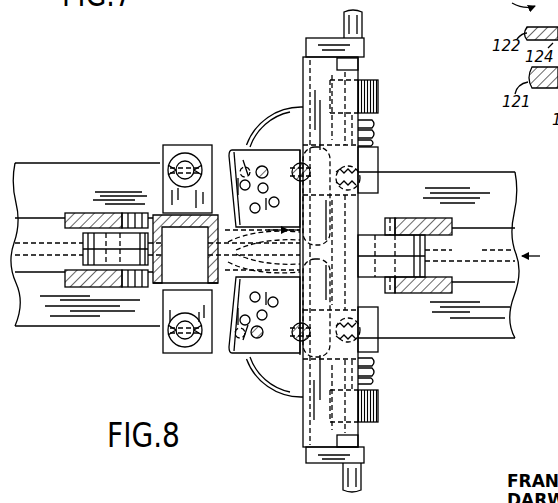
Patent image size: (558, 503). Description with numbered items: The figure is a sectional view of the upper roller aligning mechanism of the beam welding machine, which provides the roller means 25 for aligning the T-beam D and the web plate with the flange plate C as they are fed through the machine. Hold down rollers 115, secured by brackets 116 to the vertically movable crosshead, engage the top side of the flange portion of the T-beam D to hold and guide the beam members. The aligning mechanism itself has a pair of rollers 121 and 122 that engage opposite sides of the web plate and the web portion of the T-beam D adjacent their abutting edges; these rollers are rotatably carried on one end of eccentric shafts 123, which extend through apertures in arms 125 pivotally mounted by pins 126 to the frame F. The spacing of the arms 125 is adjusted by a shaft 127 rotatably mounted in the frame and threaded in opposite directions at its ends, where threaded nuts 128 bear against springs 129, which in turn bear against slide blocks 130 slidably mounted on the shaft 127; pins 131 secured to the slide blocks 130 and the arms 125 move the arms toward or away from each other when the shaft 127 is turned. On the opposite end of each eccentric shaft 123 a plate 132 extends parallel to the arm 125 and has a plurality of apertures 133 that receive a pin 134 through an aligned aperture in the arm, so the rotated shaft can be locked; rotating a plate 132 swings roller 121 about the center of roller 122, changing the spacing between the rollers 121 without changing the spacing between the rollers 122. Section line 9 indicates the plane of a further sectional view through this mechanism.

The section line 9— 9 is at (302, 178).
The roller means 25 is at (248, 103).
The hold down rollers 115 is at (83, 243).
The brackets 116 is at (82, 213).
The roller 121 is at (287, 107).
The roller 122 is at (297, 105).
The eccentric shafts 123 is at (366, 198).
The arms 125 is at (214, 143).
The pins 126 is at (170, 164).
The shaft 127 is at (362, 37).
The threaded nuts 128 is at (378, 98).
The springs 129 is at (377, 124).
The slide blocks 130 is at (379, 158).
The pins 131 is at (368, 176).
The plates 132 is at (258, 146).
The apertures 133 is at (262, 227).
The pins 134 is at (264, 166).
The flange plate C is at (462, 172).
The T-beam D is at (514, 232).
The frame F is at (157, 312).